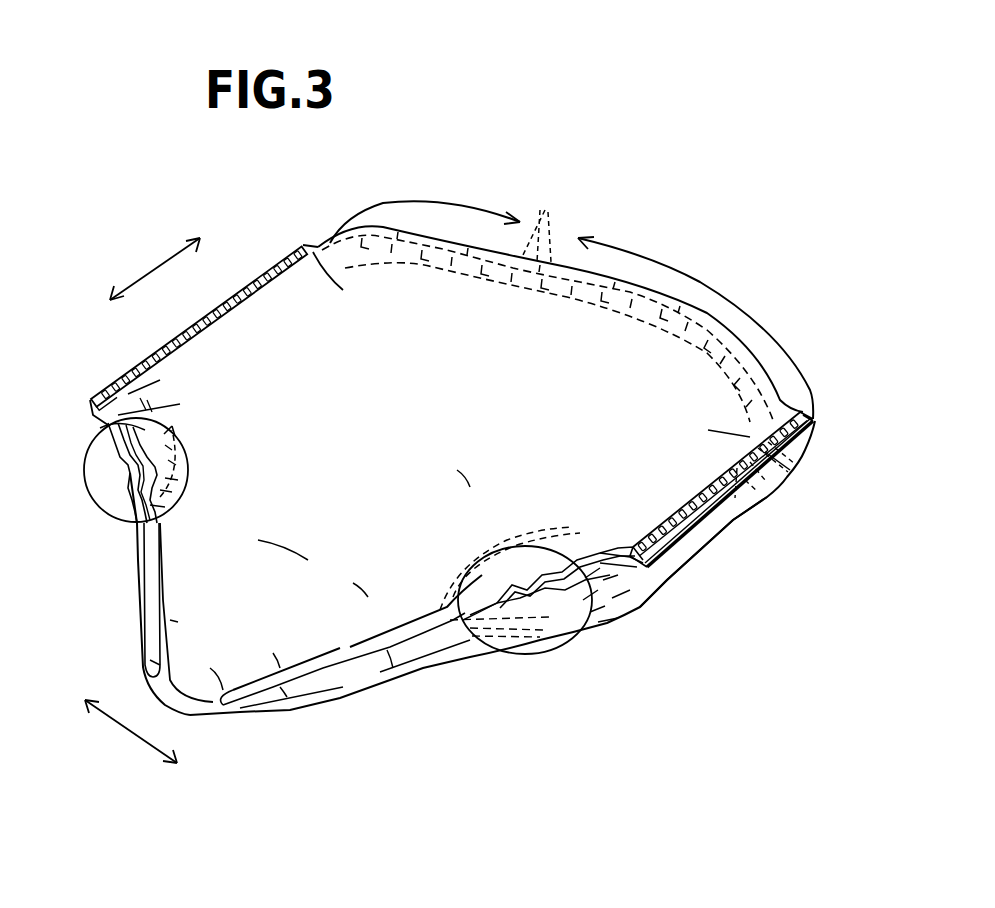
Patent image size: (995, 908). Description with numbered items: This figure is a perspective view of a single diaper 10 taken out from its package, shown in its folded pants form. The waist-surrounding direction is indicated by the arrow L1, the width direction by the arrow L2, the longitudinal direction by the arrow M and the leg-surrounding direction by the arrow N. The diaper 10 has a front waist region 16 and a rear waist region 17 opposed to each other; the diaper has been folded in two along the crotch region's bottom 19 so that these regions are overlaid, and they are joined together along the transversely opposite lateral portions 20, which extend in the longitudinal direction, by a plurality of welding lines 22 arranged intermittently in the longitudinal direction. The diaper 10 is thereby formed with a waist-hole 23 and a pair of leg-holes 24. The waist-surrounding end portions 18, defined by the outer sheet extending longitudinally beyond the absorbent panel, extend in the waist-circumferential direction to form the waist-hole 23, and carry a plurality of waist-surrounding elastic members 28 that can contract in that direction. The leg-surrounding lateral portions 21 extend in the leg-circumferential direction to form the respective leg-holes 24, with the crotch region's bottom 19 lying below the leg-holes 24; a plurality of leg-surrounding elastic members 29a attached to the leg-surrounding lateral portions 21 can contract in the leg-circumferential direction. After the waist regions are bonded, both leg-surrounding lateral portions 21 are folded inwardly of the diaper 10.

The diaper 10 is at (677, 237).
The front waist region 16 is at (401, 378).
The rear waist region 17 is at (700, 553).
The waist-surrounding end portions 18 is at (612, 330).
The crotch region's bottom 19 is at (223, 690).
The transversely opposite lateral portions 20 is at (318, 247).
The leg-surrounding lateral portions 21 is at (137, 550).
The welding lines 22 is at (257, 280).
The waist-hole 23 is at (480, 250).
The leg-holes 24 is at (90, 441).
The waist-surrounding elastic members 28 is at (539, 218).
The leg-surrounding elastic members 29a is at (190, 444).
The leg-surrounding direction N is at (88, 495).
The longitudinal direction M is at (162, 262).
The waist-surrounding direction L1 is at (743, 308).
The width direction L2 is at (122, 733).